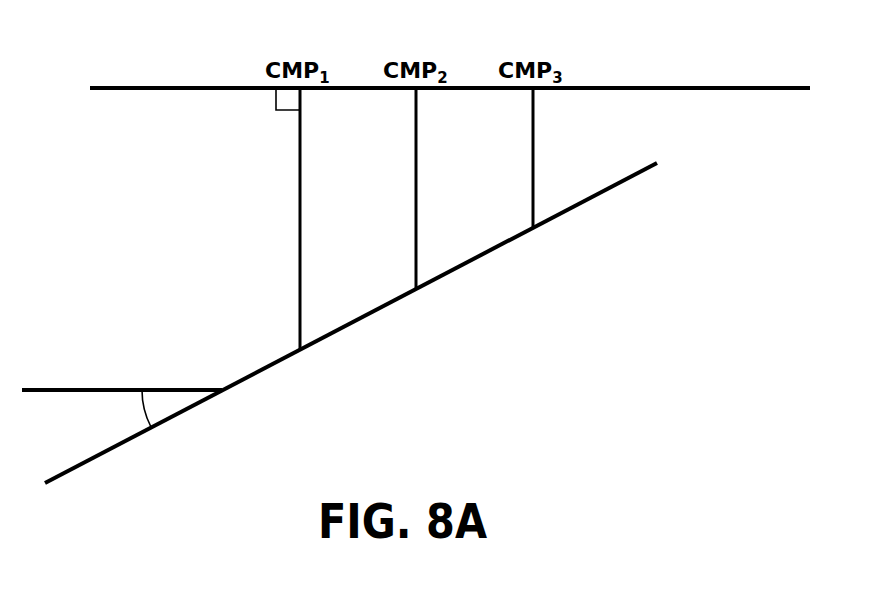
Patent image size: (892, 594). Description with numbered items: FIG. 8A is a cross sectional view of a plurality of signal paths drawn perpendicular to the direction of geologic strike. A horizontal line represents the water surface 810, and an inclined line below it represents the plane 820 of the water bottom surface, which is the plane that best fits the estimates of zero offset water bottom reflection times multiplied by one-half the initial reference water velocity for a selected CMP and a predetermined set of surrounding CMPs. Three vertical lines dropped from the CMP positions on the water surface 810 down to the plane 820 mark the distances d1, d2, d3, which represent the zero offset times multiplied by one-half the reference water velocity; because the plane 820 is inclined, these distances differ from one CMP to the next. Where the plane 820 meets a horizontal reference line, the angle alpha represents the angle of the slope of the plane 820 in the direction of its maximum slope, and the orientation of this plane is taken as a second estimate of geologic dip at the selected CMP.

The water surface 810 is at (650, 88).
The plane of the water bottom surface 820 is at (600, 193).
The distance d1 is at (281, 219).
The distance d2 is at (398, 188).
The distance d3 is at (514, 158).
The angle of the slope of the plane alpha is at (131, 409).